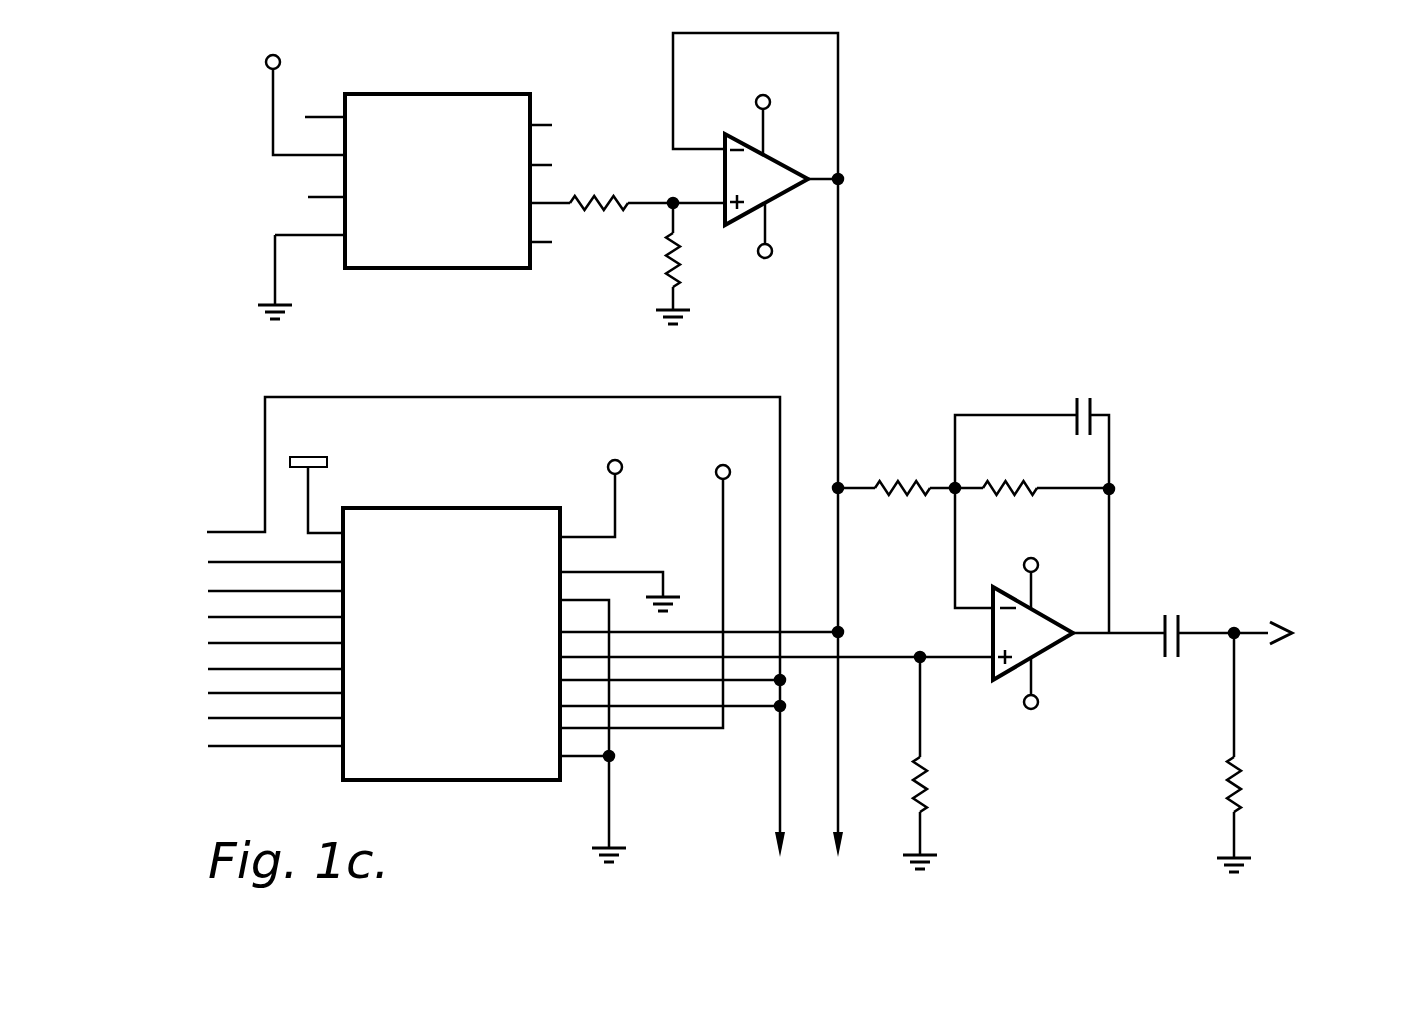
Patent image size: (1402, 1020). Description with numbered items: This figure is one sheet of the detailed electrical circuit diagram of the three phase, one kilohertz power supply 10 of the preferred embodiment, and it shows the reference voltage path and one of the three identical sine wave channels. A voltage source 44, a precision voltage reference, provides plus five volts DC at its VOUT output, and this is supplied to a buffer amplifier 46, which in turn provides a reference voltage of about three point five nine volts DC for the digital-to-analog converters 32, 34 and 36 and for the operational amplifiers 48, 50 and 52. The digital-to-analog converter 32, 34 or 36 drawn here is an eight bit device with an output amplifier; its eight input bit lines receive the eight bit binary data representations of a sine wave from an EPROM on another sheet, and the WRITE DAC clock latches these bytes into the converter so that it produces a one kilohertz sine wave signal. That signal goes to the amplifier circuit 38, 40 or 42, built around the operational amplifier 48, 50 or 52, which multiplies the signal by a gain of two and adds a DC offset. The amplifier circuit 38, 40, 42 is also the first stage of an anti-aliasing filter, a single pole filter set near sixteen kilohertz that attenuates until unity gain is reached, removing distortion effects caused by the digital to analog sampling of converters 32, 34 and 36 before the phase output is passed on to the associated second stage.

The three phase, 1 KHz power supply 10 is at (215, 92).
The voltage source 44 is at (470, 95).
The buffer amplifier 46 is at (775, 158).
The digital-to-analog converter 32 is at (503, 629).
The digital-to-analog converter 34 is at (503, 629).
The digital-to-analog converter 36 is at (400, 507).
The amplifier circuit 38 is at (1112, 610).
The amplifier circuit 40 is at (1112, 610).
The amplifier circuit 42 is at (1112, 610).
The operational amplifier 48 is at (1105, 635).
The operational amplifier 50 is at (1105, 635).
The operational amplifier 52 is at (1052, 652).